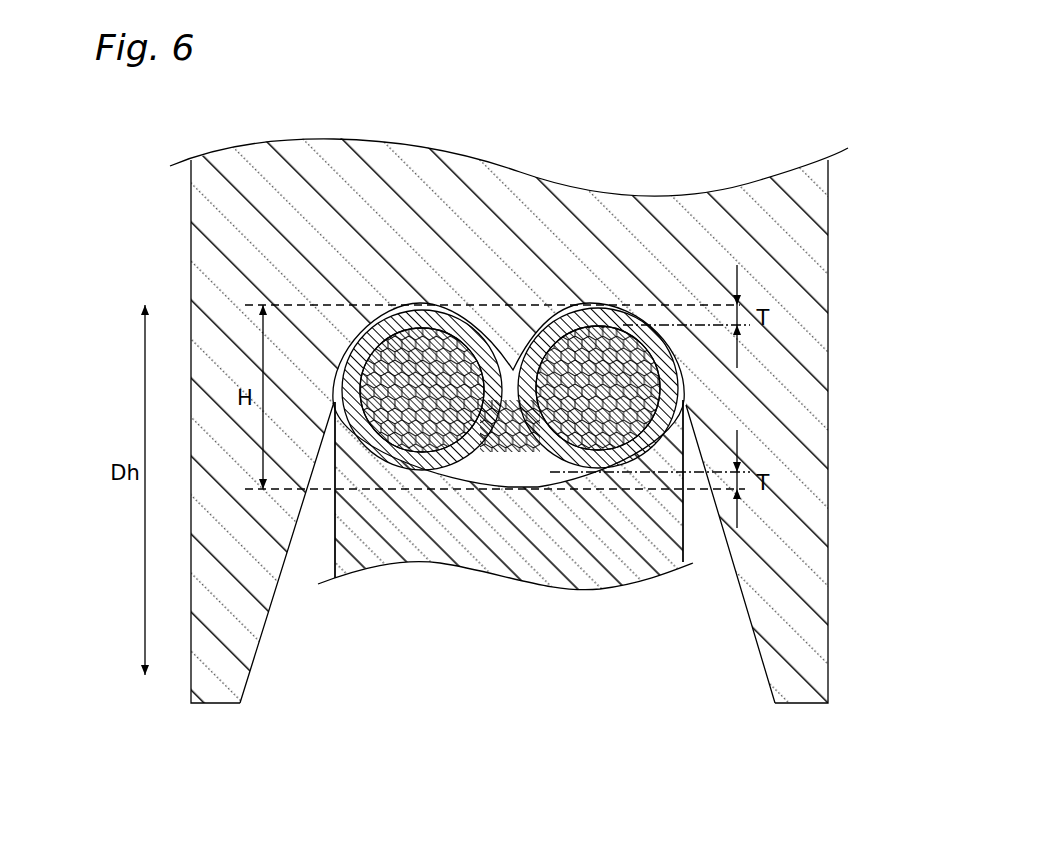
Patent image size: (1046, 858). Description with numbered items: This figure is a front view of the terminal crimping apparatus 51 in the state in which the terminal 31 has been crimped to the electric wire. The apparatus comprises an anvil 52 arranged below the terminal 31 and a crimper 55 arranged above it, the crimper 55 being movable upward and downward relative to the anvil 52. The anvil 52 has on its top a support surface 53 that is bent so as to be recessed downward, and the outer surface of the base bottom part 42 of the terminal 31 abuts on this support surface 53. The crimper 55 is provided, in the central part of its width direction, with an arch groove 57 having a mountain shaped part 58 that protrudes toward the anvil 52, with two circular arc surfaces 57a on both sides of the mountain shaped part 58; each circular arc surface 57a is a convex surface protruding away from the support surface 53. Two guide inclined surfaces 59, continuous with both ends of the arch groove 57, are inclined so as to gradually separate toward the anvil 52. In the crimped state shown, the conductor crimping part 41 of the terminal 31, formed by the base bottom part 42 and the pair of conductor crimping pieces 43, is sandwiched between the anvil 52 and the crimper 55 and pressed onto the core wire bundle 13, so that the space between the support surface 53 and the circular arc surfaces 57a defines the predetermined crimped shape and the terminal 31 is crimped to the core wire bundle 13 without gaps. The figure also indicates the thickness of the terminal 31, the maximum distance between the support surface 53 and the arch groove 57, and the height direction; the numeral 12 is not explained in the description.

The first electric wire 12 is at (392, 388).
The core wire bundle 13 is at (470, 470).
The terminal 31 is at (662, 323).
The conductor crimping part 41 is at (686, 383).
The base bottom part 42 is at (598, 340).
The conductor crimping pieces 43 is at (450, 316).
The terminal crimping apparatus 51 is at (158, 242).
The anvil 52 is at (583, 565).
The support surface 53 is at (503, 470).
The crimper 55 is at (805, 229).
The arch groove 57 is at (366, 392).
The circular arc surfaces 57a is at (410, 432).
The mountain shaped part 58 is at (552, 470).
The guide inclined surfaces 59 is at (267, 625).